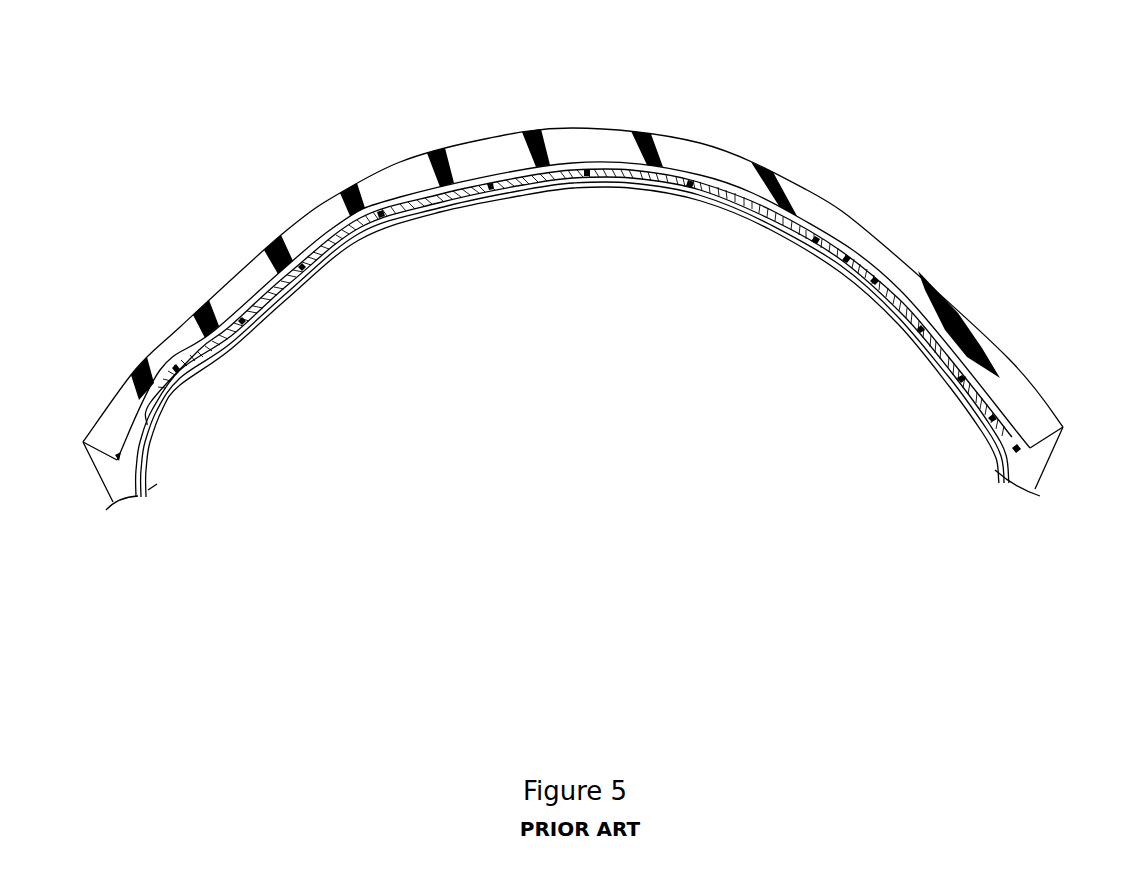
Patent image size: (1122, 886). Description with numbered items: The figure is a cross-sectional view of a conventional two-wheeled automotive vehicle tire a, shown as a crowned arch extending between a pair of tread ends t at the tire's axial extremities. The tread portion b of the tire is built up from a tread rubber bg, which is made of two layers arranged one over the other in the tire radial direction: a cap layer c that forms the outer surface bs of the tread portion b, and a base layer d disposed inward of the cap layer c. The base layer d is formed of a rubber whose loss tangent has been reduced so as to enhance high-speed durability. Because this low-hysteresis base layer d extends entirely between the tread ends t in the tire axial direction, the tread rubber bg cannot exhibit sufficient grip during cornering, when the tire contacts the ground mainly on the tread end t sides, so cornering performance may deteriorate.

The two-wheeled automotive vehicle tire a is at (820, 104).
The tread portion b is at (683, 141).
The outer surface of the tread portion bs is at (857, 220).
The tread rubber bg is at (578, 298).
The cap layer c is at (467, 150).
The base layer d is at (512, 170).
The tread end t is at (83, 442).